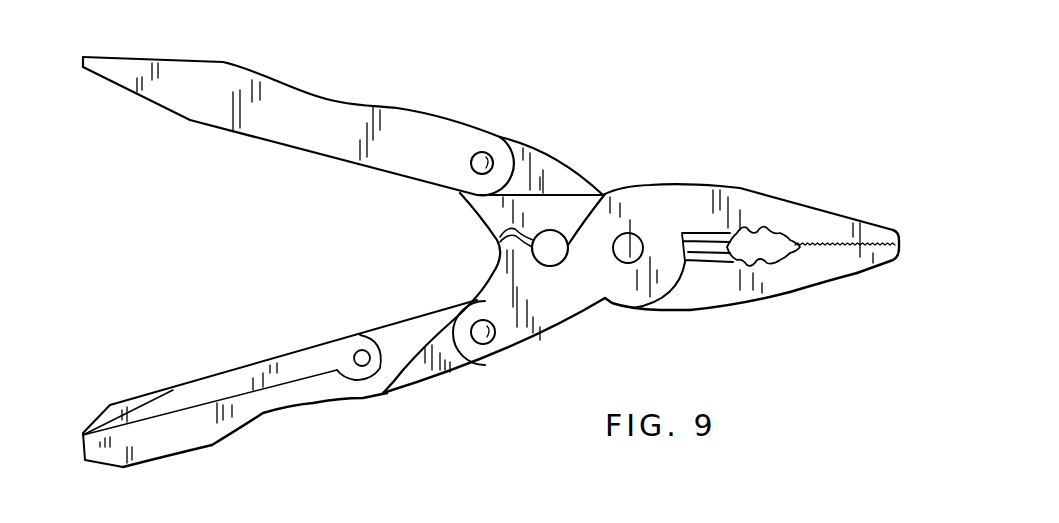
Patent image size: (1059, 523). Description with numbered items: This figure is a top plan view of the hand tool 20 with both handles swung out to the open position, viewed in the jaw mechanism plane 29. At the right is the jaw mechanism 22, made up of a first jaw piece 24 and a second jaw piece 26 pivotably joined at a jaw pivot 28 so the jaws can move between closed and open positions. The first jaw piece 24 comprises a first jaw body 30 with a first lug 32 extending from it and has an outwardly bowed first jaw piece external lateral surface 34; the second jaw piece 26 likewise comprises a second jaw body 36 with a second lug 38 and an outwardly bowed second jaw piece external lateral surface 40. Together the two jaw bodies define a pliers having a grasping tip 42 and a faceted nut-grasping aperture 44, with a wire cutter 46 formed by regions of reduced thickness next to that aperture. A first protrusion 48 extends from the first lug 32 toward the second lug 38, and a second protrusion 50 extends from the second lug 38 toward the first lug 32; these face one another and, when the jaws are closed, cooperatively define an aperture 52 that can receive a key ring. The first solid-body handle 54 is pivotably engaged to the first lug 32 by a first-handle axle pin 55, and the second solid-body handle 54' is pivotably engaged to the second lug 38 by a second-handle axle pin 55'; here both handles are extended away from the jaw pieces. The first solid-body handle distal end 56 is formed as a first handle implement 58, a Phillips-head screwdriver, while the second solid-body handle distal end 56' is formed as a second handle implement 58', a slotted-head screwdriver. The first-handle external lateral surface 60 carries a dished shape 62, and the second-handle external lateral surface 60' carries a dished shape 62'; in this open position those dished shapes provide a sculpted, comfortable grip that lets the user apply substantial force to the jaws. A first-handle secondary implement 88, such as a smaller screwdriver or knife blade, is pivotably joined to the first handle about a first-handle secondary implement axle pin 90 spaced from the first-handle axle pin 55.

The hand tool 20 is at (756, 231).
The jaw mechanism 22 is at (856, 272).
The first jaw piece 24 is at (772, 212).
The second jaw piece 26 is at (722, 285).
The jaw pivot 28 is at (617, 252).
The jaw mechanism plane 29 is at (312, 238).
The first jaw body 30 is at (820, 220).
The first lug 32 is at (507, 342).
The first jaw piece external lateral surface 34 is at (740, 188).
The second jaw body 36 is at (790, 280).
The second lug 38 is at (529, 162).
The second jaw piece external lateral surface 40 is at (663, 312).
The grasping tip 42 is at (870, 233).
The faceted nut-grasping aperture 44 is at (763, 246).
The wire cutter 46 is at (708, 258).
The first protrusion 48 is at (498, 262).
The second protrusion 50 is at (497, 239).
The aperture 52 is at (554, 230).
The first solid-body handle 54 is at (128, 399).
The second solid-body handle 54' is at (296, 128).
The first-handle axle pin 55 is at (482, 351).
The second-handle axle pin 55' is at (465, 188).
The first solid-body handle distal end 56 is at (210, 434).
The second solid-body handle distal end 56' is at (280, 129).
The first handle implement 58 is at (76, 436).
The second handle implement 58' is at (110, 45).
The first-handle external lateral surface 60 is at (187, 458).
The second-handle external lateral surface 60' is at (456, 134).
The dished shape 62 is at (299, 419).
The dished shape 62' is at (291, 97).
The first-handle secondary implement 88 is at (290, 357).
The first-handle secondary implement axle pin 90 is at (360, 355).